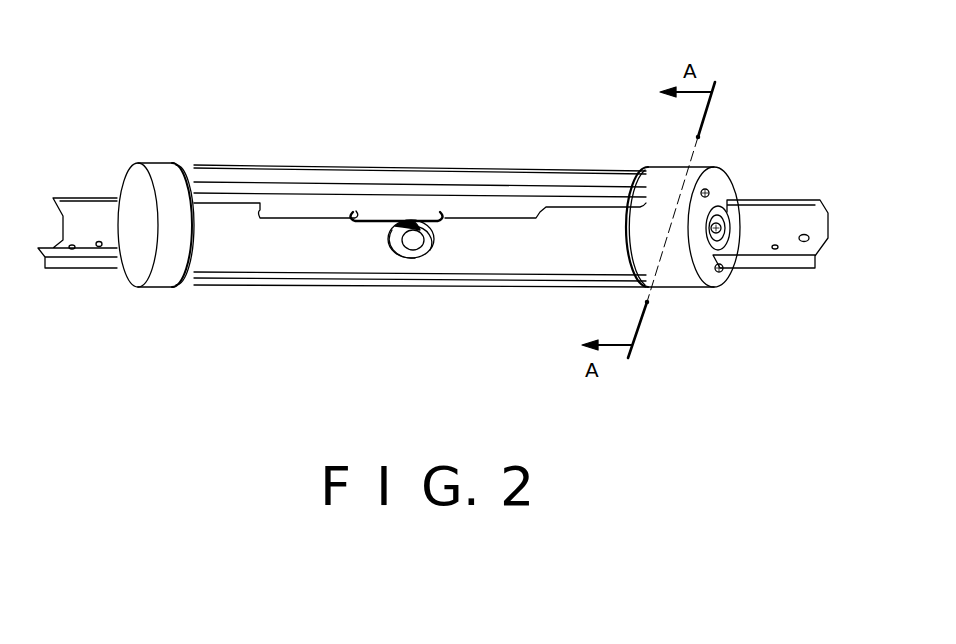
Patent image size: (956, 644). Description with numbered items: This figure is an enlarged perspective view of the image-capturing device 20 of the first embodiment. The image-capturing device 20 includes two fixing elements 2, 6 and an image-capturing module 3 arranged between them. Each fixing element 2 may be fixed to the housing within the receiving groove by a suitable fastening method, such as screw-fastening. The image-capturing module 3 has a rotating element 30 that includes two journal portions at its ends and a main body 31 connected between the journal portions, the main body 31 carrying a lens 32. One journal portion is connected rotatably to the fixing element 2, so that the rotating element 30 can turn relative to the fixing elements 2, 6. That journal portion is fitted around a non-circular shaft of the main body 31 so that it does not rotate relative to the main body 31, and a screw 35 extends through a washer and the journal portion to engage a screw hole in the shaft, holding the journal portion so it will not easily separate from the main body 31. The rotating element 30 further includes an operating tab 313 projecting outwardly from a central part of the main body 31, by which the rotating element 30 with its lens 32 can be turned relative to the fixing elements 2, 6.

The fixing element 2 is at (745, 195).
The image-capturing module 3 is at (559, 141).
The fixing element 6 is at (102, 189).
The image-capturing device 20 is at (183, 154).
The rotating element 30 is at (440, 202).
The main body 31 is at (492, 243).
The lens 32 is at (405, 243).
The screw 35 is at (724, 226).
The operating tab 313 is at (402, 215).